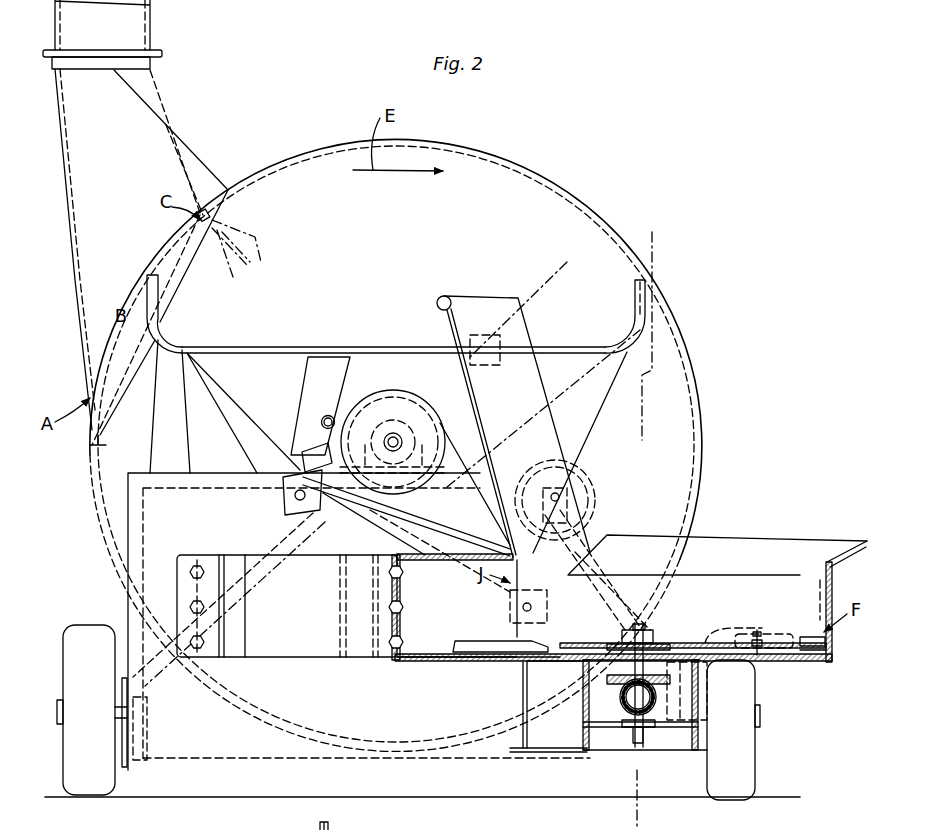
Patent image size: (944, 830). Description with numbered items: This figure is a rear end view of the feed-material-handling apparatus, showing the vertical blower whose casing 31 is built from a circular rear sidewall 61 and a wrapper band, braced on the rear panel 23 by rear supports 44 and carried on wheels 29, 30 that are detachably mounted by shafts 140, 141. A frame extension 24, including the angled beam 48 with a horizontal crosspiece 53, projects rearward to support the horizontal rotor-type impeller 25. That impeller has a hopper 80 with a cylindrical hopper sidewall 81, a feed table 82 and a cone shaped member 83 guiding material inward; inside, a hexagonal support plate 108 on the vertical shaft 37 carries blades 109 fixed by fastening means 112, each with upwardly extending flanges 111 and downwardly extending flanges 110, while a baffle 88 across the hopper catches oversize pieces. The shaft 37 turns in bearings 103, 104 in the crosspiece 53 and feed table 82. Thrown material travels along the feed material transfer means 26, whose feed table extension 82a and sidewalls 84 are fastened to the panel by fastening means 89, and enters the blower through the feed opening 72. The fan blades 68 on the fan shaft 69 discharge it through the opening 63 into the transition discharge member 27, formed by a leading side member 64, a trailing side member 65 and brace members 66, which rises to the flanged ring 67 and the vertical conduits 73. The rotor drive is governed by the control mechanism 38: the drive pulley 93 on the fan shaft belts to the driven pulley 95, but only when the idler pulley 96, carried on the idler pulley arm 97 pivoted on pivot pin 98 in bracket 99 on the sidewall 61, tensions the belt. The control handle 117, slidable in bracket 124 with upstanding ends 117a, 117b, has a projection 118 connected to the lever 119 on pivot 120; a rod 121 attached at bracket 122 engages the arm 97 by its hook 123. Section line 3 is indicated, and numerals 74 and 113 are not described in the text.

The blower casing 31 is at (493, 143).
The vertical conduits 73 is at (140, 26).
The flanged ring 67 is at (78, 56).
The leading side member 64 is at (77, 333).
The brace members 66 is at (197, 155).
The trailing side member 65 is at (157, 90).
The transition discharge member 27 is at (175, 117).
The support link 74 is at (212, 170).
The discharge opening 63 is at (178, 226).
The blades 68 is at (265, 241).
The upstanding end 117a is at (160, 296).
The rear supports 44 is at (190, 347).
The control handle 117 is at (646, 293).
The upstanding end 117b is at (644, 311).
The section line 3- 3 is at (648, 255).
The control mechanism 38 is at (250, 497).
The rear panel 23 is at (128, 532).
The frame extension 24 is at (548, 755).
The projection 118 is at (327, 367).
The lever 119 is at (312, 420).
The pivot 120 is at (322, 497).
The bracket 122 is at (284, 496).
The fan shaft 69 is at (397, 437).
The drive pulley 93 is at (391, 398).
The baffle 88 is at (462, 303).
The bracket 124 is at (516, 311).
The idler pulley 96 is at (583, 483).
The hook 123 is at (573, 538).
The rod 121 is at (431, 505).
The sidewalls 84 is at (300, 644).
The feed opening 72 is at (218, 658).
The feed table extension 82a is at (396, 657).
The fastening means 89 is at (189, 640).
The feed material transfer means 26 is at (470, 668).
The pivot pin 98 is at (510, 612).
The idler pulley arm 97 is at (556, 618).
The bracket 99 is at (520, 679).
The cone shaped member 83 is at (780, 546).
The horizontal rotor-type impeller 25 is at (726, 528).
The hopper sidewall 81 is at (829, 600).
The upwardly extending flanges 111 is at (826, 640).
The downwardly extending flanges 110 is at (830, 659).
The feed table 82 is at (784, 662).
The hopper 80 is at (792, 674).
The fastening means 112 is at (759, 630).
The blades 109 is at (785, 640).
The support plate 108 is at (675, 650).
The bearing 104 is at (650, 640).
The shaft nut 113 is at (639, 630).
The driven pulley 95 is at (583, 698).
The vertical shaft 37 is at (623, 735).
The bearing 103 is at (650, 742).
The horizontal crosspiece 53 is at (598, 735).
The beam 48 is at (582, 742).
The wheel 29 is at (99, 786).
The shaft 140 is at (60, 724).
The wheel 30 is at (732, 790).
The shaft 141 is at (762, 722).
The rear sidewall 61 is at (380, 828).